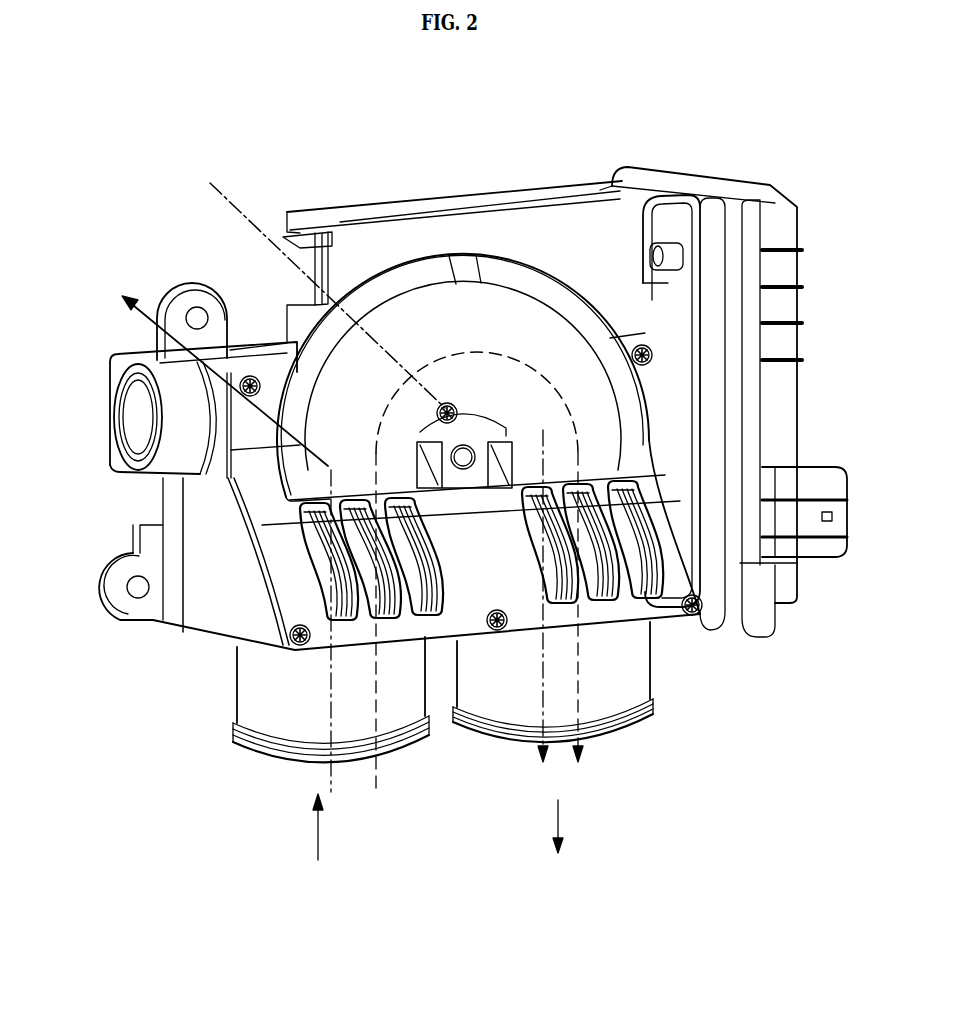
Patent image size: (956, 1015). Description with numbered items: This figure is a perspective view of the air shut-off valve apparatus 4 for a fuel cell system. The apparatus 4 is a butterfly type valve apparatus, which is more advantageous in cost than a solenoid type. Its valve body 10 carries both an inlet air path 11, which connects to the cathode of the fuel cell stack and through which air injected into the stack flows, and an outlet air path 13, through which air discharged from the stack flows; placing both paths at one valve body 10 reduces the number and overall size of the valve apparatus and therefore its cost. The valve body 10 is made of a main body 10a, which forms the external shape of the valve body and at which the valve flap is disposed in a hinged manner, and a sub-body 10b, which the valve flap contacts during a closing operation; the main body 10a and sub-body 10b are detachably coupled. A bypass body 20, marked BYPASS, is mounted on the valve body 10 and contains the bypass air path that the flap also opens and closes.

The air shut-off valve apparatus 4 is at (442, 97).
The valve body 10 is at (553, 170).
The main body 10a is at (157, 340).
The sub-body 10b is at (175, 388).
The inlet air path 11 is at (273, 705).
The outlet air path 13 is at (503, 688).
The bypass body 20 is at (478, 255).